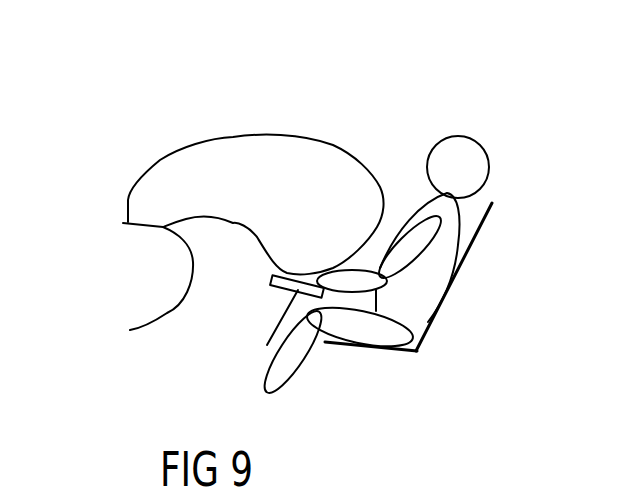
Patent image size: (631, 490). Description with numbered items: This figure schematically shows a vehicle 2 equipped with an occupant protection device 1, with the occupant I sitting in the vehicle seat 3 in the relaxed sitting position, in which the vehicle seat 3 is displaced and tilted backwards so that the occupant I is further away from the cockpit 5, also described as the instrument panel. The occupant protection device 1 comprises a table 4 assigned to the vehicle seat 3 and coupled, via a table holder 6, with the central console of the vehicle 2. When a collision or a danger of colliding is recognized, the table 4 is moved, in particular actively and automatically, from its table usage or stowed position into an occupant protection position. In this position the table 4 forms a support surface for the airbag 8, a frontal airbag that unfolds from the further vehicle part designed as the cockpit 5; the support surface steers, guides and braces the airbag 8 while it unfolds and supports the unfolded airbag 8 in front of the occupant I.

The occupant protection device 1 is at (220, 166).
The vehicle 2 is at (464, 268).
The vehicle seat 3 is at (414, 353).
The table 4 is at (282, 283).
The cockpit 5 is at (143, 280).
The table holder 6 is at (267, 345).
The airbag 8 is at (197, 170).
The occupant I is at (480, 168).